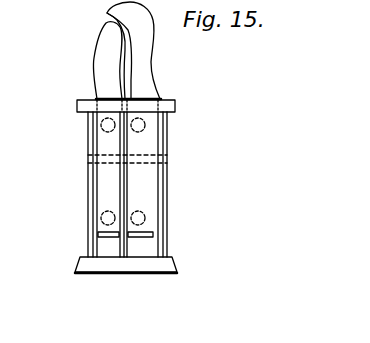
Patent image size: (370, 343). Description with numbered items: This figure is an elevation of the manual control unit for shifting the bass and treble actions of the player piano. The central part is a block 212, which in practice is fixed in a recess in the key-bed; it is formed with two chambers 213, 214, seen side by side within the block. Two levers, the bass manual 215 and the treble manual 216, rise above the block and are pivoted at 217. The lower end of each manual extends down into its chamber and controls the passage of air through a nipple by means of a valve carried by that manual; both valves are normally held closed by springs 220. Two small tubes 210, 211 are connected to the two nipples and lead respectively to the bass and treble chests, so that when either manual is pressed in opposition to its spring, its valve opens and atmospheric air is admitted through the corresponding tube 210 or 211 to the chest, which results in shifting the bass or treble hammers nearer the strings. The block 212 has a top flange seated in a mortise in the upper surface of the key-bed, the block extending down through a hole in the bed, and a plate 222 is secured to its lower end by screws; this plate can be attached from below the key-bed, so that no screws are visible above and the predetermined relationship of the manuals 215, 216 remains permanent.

The small tube 210 is at (100, 217).
The small tube 211 is at (152, 218).
The block 212 is at (167, 191).
The chamber 213 is at (98, 235).
The chamber 214 is at (153, 235).
The bass manual 215 is at (99, 52).
The treble manual 216 is at (152, 49).
The pivot 217 is at (168, 158).
The spring 220 is at (146, 128).
The plate 222 is at (175, 269).